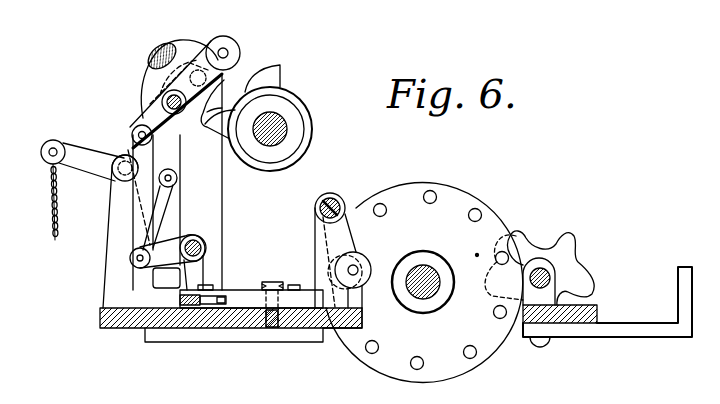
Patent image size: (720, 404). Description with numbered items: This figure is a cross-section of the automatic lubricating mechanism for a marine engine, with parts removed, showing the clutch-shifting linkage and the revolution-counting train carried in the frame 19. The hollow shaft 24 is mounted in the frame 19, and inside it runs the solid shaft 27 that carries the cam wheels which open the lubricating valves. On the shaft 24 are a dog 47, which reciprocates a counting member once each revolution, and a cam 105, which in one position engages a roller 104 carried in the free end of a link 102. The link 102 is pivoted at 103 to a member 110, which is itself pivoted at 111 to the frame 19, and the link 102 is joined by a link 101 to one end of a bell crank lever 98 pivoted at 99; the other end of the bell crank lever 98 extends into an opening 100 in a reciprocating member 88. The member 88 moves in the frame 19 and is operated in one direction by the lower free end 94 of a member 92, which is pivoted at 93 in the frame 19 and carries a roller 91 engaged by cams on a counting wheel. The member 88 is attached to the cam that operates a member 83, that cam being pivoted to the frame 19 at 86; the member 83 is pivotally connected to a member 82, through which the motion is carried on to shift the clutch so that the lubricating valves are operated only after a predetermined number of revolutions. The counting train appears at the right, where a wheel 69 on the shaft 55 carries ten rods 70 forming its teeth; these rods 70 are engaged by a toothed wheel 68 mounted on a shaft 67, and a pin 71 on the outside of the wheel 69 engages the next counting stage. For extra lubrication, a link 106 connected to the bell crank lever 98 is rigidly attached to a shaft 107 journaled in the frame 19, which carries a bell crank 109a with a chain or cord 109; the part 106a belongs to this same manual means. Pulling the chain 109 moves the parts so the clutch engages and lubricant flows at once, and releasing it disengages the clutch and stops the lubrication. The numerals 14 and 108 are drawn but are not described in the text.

The lever arm 14 is at (350, 240).
The frame 19 is at (210, 183).
The shaft 24 is at (289, 111).
The solid shaft 27 is at (276, 135).
The dog 47 is at (272, 78).
The shaft 55 is at (432, 290).
The shaft 67 is at (550, 279).
The second toothed wheel 68 is at (568, 243).
The wheel 69 is at (446, 203).
The rods 70 is at (480, 214).
The pin 71 is at (472, 356).
The member 82 is at (186, 302).
The member 83 is at (232, 298).
The pivot 86 is at (278, 283).
The member 88 is at (296, 322).
The roller 91 is at (364, 271).
The member 92 is at (330, 234).
The pivot 93 is at (331, 203).
The lower free end 94 is at (358, 316).
The bell crank lever 98 is at (167, 259).
The pivot 99 is at (193, 246).
The opening 100 is at (209, 306).
The link 101 is at (138, 222).
The link 102 is at (153, 115).
The pivot 103 is at (180, 119).
The roller 104 is at (241, 46).
The cam 105 is at (226, 108).
The link 106 is at (160, 206).
The part of extra-lubrication means 106a is at (177, 178).
The shaft 107 is at (115, 184).
The post 108 is at (129, 180).
The cord or chain 109 is at (53, 236).
The bell crank 109a is at (103, 147).
The member 110 is at (180, 52).
The pivot 111 is at (202, 102).